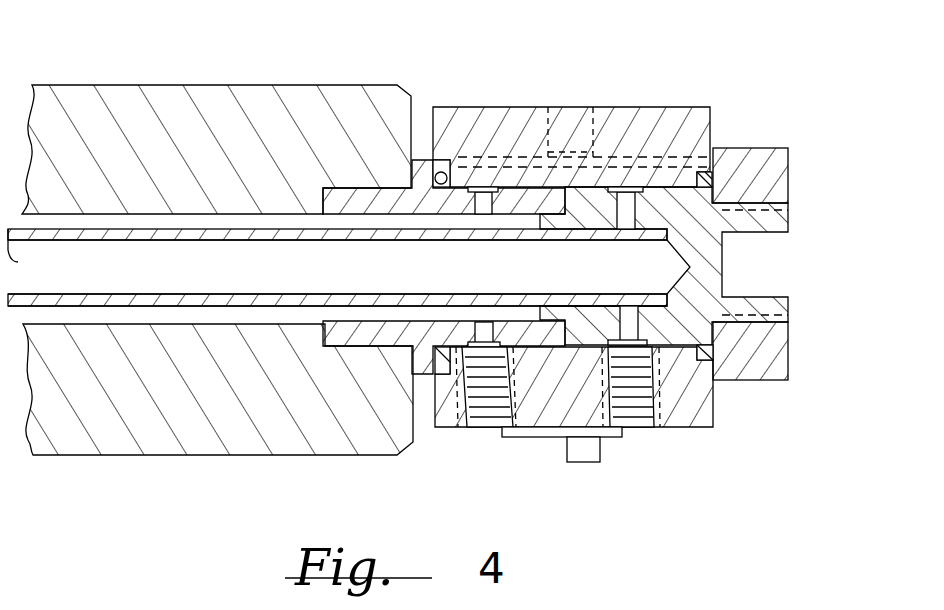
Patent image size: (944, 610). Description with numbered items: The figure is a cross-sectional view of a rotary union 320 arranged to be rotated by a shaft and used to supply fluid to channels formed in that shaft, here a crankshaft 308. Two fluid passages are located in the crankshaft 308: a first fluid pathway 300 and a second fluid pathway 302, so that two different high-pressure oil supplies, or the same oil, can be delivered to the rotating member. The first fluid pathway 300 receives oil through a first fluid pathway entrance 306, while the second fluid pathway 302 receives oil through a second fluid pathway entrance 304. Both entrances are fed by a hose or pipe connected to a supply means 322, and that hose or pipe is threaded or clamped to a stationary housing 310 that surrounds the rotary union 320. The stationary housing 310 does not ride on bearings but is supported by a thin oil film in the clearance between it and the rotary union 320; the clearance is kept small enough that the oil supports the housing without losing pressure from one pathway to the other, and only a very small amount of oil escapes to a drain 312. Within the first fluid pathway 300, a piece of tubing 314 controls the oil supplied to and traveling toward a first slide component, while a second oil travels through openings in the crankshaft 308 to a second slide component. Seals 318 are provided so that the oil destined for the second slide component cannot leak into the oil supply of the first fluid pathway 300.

The first fluid pathway 300 is at (247, 268).
The second fluid pathway 302 is at (388, 223).
The second fluid pathway entrance 304 is at (490, 415).
The first fluid pathway entrance 306 is at (635, 413).
The crankshaft 308 is at (294, 432).
The stationary housing 310 is at (665, 122).
The drain 312 is at (558, 157).
The tubing 314 is at (103, 308).
The seals 318 is at (443, 172).
The rotary union 320 is at (722, 418).
The supply means 322 is at (588, 457).